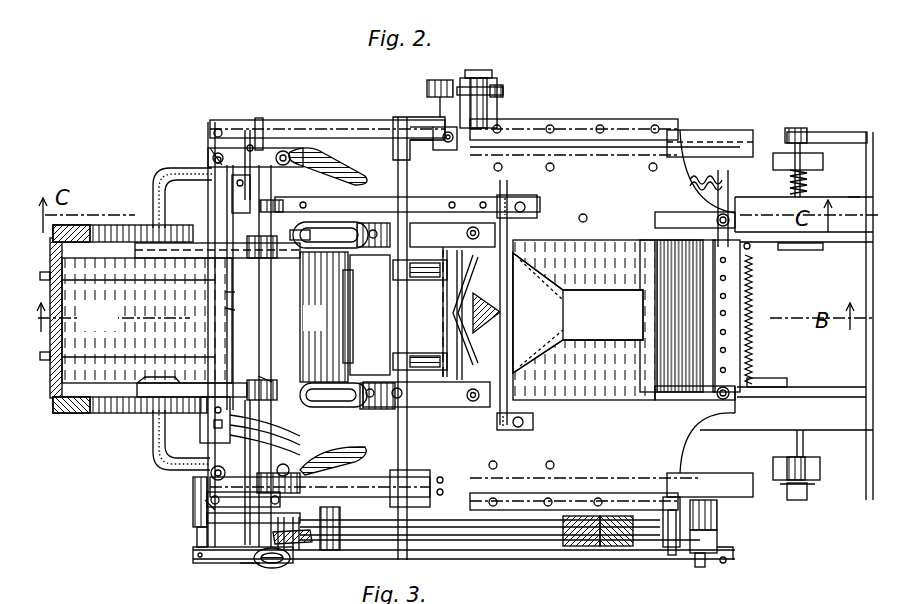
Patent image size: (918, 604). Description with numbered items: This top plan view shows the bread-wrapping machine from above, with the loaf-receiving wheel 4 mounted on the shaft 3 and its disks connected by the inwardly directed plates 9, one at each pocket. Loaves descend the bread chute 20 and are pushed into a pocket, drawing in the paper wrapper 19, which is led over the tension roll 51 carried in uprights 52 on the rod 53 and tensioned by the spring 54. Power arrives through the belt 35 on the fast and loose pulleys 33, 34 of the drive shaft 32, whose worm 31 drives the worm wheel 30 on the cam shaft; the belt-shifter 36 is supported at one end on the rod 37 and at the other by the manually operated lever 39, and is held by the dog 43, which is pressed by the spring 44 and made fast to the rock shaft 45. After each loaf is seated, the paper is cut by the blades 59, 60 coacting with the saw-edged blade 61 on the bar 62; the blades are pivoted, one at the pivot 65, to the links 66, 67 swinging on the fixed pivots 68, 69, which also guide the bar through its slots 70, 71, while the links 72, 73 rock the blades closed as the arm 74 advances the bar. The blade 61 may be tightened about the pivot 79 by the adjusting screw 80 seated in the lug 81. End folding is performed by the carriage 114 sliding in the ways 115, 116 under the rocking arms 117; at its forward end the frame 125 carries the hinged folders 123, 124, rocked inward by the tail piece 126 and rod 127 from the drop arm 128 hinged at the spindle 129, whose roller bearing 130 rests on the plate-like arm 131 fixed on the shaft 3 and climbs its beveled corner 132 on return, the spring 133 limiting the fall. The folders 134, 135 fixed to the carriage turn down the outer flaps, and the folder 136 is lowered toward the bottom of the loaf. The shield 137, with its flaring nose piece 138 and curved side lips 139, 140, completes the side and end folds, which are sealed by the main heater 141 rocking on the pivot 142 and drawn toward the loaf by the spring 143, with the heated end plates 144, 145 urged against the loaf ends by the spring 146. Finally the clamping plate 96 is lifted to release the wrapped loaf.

The shaft 3 is at (478, 72).
The loaf-receiving wheel 4 is at (370, 315).
The inwardly directed plates 9 is at (324, 317).
The paper wrapper 19 is at (786, 316).
The bread chute 20 is at (88, 388).
The worm wheel 30 is at (627, 546).
The worm 31 is at (590, 548).
The drive shaft 32 is at (537, 538).
The fast pulley 33 is at (700, 540).
The loose pulley 34 is at (680, 543).
The belt 35 is at (718, 517).
The belt-shifter 36 is at (726, 560).
The rod 37 is at (728, 563).
The manually operated lever 39 is at (268, 568).
The dog 43 is at (217, 553).
The spring 44 is at (250, 567).
The rock shaft 45 is at (200, 537).
The tension roll 51 is at (850, 197).
The uprights 52 is at (830, 138).
The rod 53 is at (805, 455).
The spring 54 is at (790, 190).
The blade 59 is at (320, 562).
The blade 60 is at (322, 155).
The blade 61 is at (233, 295).
The bar 62 is at (225, 310).
The pivot 65 is at (289, 152).
The link 66 is at (205, 500).
The link 67 is at (243, 153).
The fixed pivot 68 is at (200, 480).
The fixed pivot 69 is at (218, 157).
The slot 70 is at (210, 473).
The slot 71 is at (214, 156).
The link 72 is at (243, 507).
The link 73 is at (256, 120).
The arm 74 is at (290, 420).
The pivot 79 is at (160, 455).
The adjusting screw 80 is at (205, 432).
The lug 81 is at (213, 430).
The clamping plate 96 is at (345, 340).
The carriage 114 is at (450, 203).
The ways 115 is at (620, 500).
The ways 116 is at (580, 127).
The rocking arms 117 is at (682, 127).
The folder 123 is at (180, 393).
The folder 124 is at (185, 250).
The frame 125 is at (343, 127).
The tail piece 126 is at (277, 208).
The rod 127 is at (344, 305).
The drop arm 128 is at (495, 196).
The spindle 129 is at (407, 120).
The roller bearing 130 is at (432, 87).
The plate-like arm 131 is at (500, 95).
The beveled corner 132 is at (505, 91).
The spring 133 is at (407, 211).
The folder 134 is at (260, 380).
The folder 135 is at (300, 233).
The folder 136 is at (447, 327).
The shield 137 is at (590, 292).
The nose piece 138 is at (497, 305).
The curved side lip 139 is at (567, 348).
The curved side lip 140 is at (577, 258).
The main heater 141 is at (727, 303).
The pivot 142 is at (716, 222).
The spring 143 is at (700, 197).
The plate 144 is at (763, 383).
The plate 145 is at (780, 252).
The spring 146 is at (753, 313).